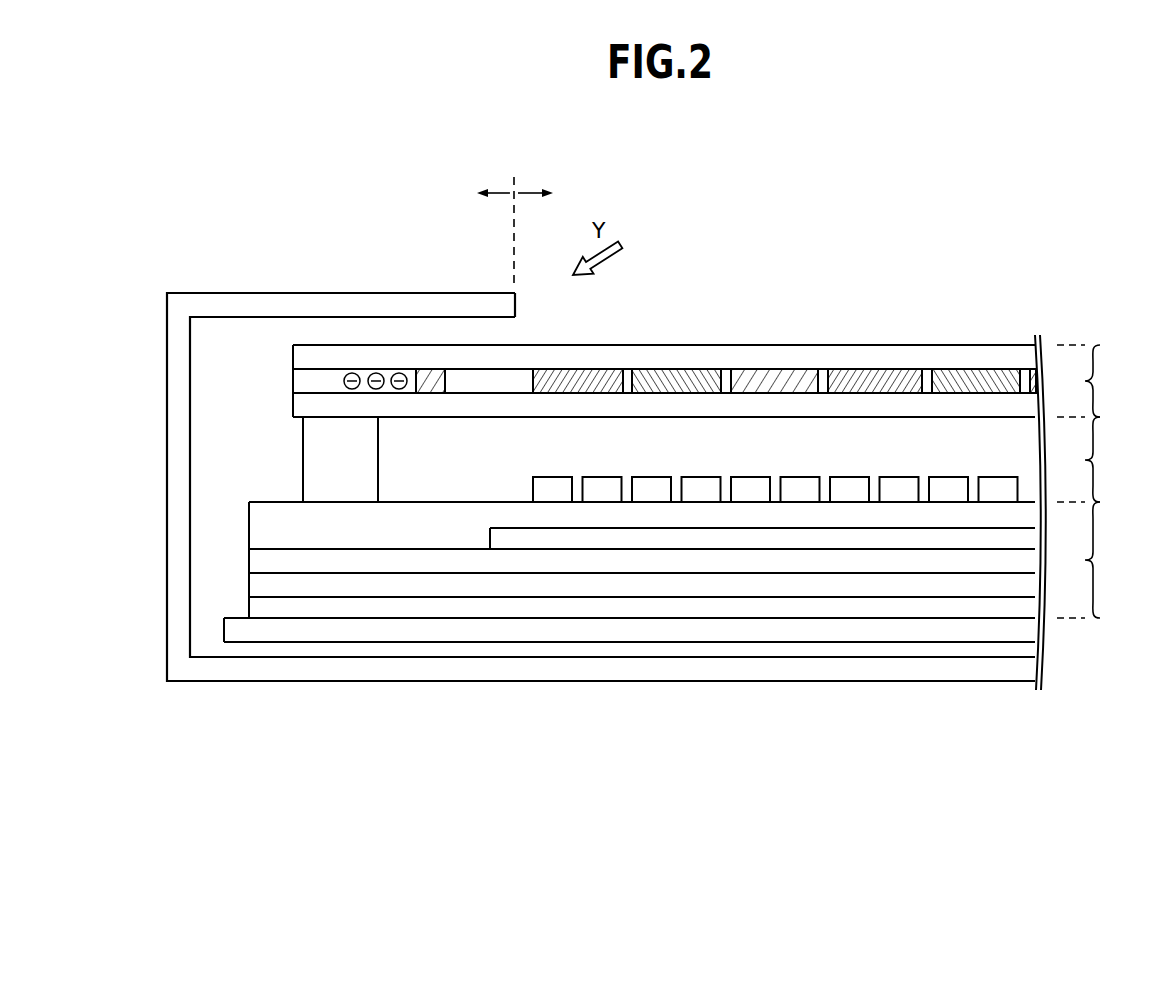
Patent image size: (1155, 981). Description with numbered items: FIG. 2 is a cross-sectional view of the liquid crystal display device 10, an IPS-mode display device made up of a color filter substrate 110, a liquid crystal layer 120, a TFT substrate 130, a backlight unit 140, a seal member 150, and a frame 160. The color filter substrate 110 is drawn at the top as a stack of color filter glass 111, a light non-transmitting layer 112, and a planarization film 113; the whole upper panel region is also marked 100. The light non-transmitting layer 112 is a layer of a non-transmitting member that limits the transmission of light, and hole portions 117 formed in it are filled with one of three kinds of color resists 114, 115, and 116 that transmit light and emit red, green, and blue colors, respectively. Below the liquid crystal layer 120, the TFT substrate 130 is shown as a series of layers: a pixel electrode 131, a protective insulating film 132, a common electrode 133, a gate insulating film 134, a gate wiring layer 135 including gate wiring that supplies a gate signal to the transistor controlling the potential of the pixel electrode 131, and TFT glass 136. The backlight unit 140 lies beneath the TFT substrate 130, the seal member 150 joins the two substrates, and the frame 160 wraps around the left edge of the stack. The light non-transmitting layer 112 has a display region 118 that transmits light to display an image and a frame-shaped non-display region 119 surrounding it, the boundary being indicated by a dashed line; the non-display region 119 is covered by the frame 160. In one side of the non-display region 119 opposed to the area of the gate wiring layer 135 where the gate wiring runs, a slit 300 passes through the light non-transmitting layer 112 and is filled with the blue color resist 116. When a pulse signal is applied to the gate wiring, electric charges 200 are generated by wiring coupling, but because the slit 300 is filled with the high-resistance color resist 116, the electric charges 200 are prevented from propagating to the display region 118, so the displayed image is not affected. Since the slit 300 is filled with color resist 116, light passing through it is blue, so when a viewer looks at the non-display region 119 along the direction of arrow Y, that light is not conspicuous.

The liquid crystal display device 10 is at (899, 706).
The electrophoretic display panel 100 is at (619, 346).
The color filter substrate 110 is at (1104, 381).
The color filter glass 111 is at (293, 357).
The light non-transmitting layer 112 is at (293, 382).
The planarization film 113 is at (293, 410).
The color resist 114 is at (575, 370).
The color resist 115 is at (678, 370).
The color resist 116 is at (430, 370).
The hole portion 117 is at (530, 380).
The display region 118 is at (559, 192).
The non-display region 119 is at (466, 192).
The liquid crystal layer 120 is at (1104, 459).
The TFT substrate 130 is at (1104, 560).
The pixel electrode 131 is at (547, 477).
The protective insulating film 132 is at (248, 520).
The common electrode 133 is at (493, 528).
The gate insulating film 134 is at (248, 560).
The gate wiring layer 135 is at (248, 588).
The TFT glass 136 is at (248, 608).
The backlight unit 140 is at (277, 642).
The seal member 150 is at (303, 454).
The frame 160 is at (208, 293).
The electric charges 200 is at (377, 309).
The slit 300 is at (400, 373).